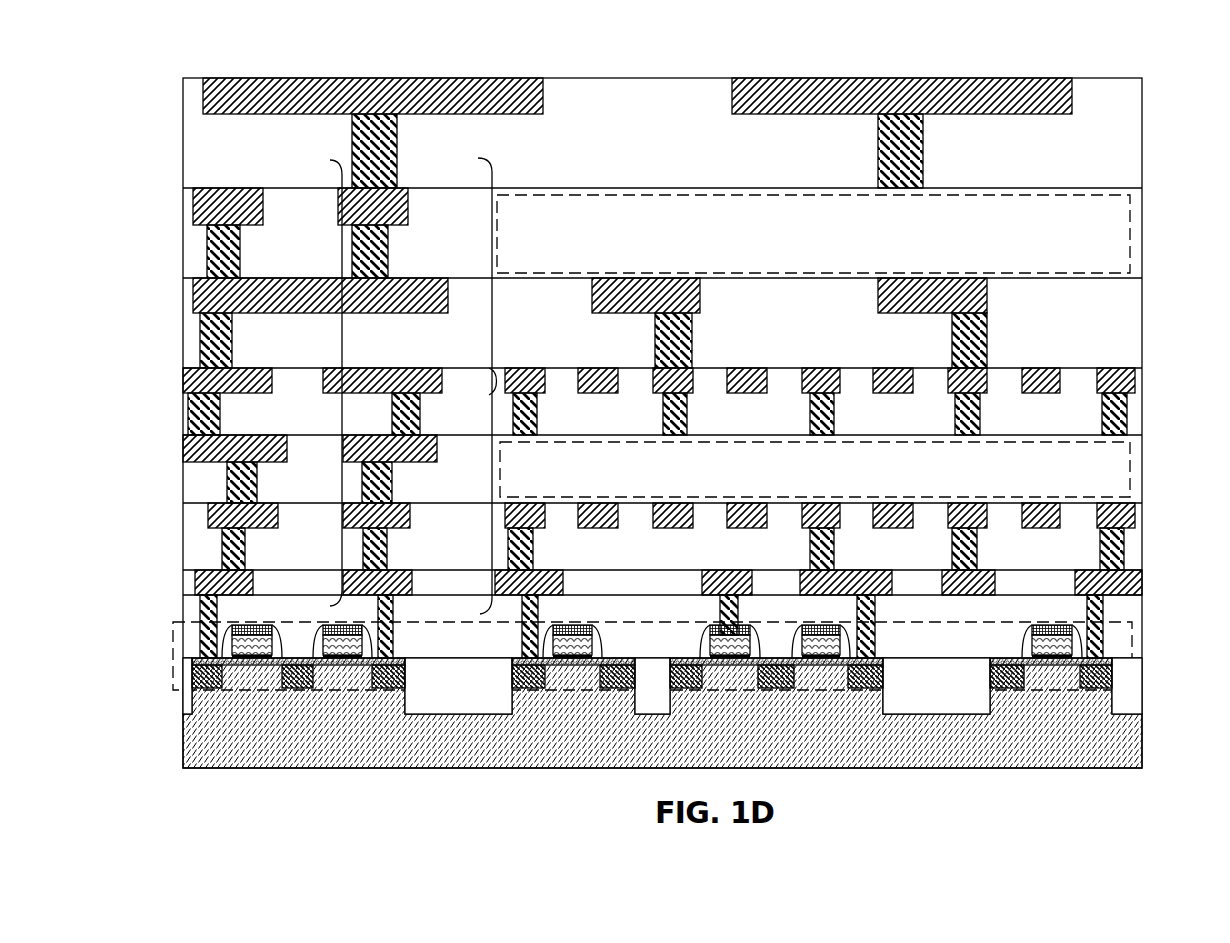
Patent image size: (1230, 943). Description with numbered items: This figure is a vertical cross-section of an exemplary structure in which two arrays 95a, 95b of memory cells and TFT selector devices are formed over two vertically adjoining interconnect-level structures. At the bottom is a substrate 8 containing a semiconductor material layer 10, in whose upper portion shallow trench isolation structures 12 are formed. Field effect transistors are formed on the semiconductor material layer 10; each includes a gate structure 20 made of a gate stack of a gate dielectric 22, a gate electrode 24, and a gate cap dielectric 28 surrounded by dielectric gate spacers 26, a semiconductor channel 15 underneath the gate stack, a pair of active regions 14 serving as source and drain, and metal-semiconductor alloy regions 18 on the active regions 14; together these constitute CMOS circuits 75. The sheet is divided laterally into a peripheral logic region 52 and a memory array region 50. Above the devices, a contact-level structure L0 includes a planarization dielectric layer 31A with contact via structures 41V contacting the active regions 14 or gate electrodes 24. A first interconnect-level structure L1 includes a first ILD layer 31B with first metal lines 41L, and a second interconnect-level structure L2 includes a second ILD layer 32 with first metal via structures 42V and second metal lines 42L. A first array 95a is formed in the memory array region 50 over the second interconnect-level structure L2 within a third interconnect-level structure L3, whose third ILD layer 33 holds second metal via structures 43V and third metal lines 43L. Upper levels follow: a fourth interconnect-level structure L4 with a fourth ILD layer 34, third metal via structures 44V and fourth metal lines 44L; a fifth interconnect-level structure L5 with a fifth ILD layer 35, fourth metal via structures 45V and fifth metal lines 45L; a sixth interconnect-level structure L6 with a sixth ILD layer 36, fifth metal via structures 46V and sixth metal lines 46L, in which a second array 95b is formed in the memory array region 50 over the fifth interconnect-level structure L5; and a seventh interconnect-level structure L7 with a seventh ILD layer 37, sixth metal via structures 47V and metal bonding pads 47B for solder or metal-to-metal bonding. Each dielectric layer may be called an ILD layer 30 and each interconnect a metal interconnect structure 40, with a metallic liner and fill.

The peripheral logic region 52 is at (555, 72).
The memory array region 50 is at (1120, 72).
The metal bonding pads 47B is at (391, 107).
The sixth metal via structures 47V is at (353, 126).
The sixth metal lines 46L is at (256, 213).
The fifth metal via structures 46V is at (228, 260).
The fifth metal lines 45L is at (258, 302).
The fourth metal via structures 45V is at (216, 352).
The fourth metal lines 44L is at (272, 380).
The third metal via structures 44V is at (220, 428).
The third metal lines 43L is at (264, 459).
The second metal via structures 43V is at (250, 492).
The second metal lines 42L is at (254, 521).
The first metal via structures 42V is at (244, 559).
The first metal lines 41L is at (250, 593).
The contact via structures 41V is at (217, 615).
The seventh ILD layer 37 is at (476, 171).
The sixth ILD layer 36 is at (476, 249).
The fifth ILD layer 35 is at (476, 351).
The fourth ILD layer 34 is at (476, 427).
The third ILD layer 33 is at (476, 491).
The second ILD layer 32 is at (476, 542).
The first ILD layer 31B is at (472, 597).
The planarization dielectric layer 31A is at (472, 622).
The metal interconnect structure 40 is at (346, 376).
The ILD layer 30 is at (504, 386).
The second array 95b is at (874, 234).
The first array 95a is at (914, 471).
The complementary metal-oxide-semiconductor circuits 75 is at (999, 627).
The semiconductor material layer 10 is at (612, 757).
The shallow trench isolation structures 12 is at (476, 712).
The active region 14 is at (206, 672).
The metal-semiconductor alloy regions 18 is at (232, 676).
The semiconductor channel 15 is at (266, 676).
The gate structure 20 is at (652, 698).
The gate dielectric 22 is at (332, 672).
The gate electrode 24 is at (352, 666).
The gate cap dielectric 28 is at (366, 656).
The dielectric gate spacers 26 is at (376, 643).
The substrate 8 is at (1150, 668).
The seventh interconnect-level structure L7 is at (1150, 78).
The sixth interconnect-level structure L6 is at (1150, 190).
The fifth interconnect-level structure L5 is at (1150, 280).
The fourth interconnect-level structure L4 is at (1150, 370).
The third interconnect-level structure L3 is at (1150, 437).
The second interconnect-level structure L2 is at (1150, 505).
The first interconnect-level structure L1 is at (1150, 572).
The contact-level structure L0 is at (1150, 597).